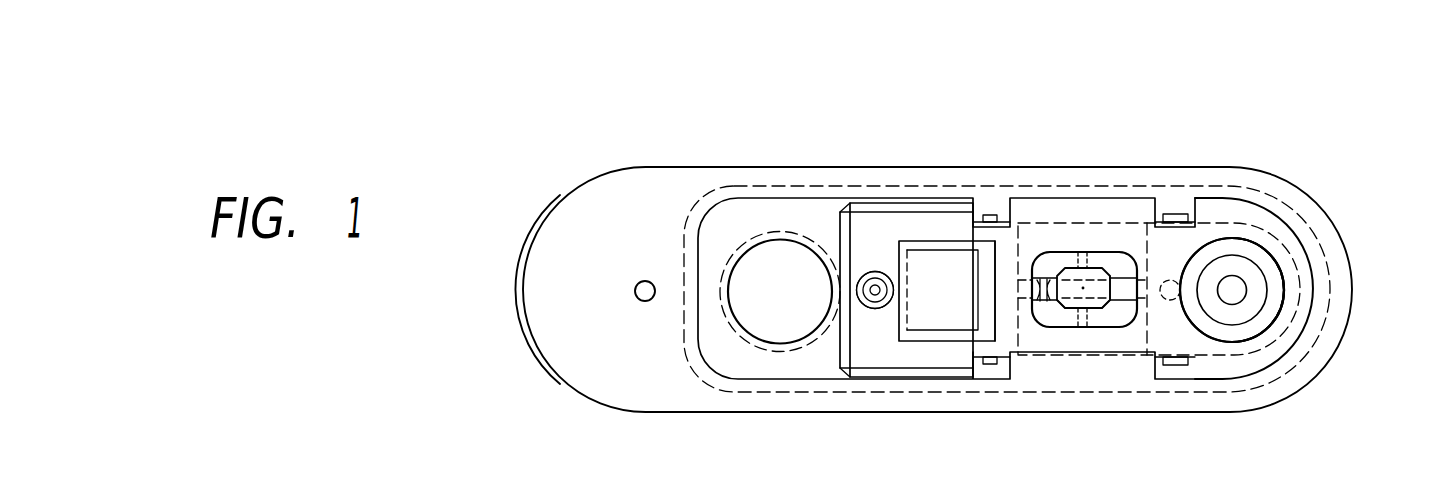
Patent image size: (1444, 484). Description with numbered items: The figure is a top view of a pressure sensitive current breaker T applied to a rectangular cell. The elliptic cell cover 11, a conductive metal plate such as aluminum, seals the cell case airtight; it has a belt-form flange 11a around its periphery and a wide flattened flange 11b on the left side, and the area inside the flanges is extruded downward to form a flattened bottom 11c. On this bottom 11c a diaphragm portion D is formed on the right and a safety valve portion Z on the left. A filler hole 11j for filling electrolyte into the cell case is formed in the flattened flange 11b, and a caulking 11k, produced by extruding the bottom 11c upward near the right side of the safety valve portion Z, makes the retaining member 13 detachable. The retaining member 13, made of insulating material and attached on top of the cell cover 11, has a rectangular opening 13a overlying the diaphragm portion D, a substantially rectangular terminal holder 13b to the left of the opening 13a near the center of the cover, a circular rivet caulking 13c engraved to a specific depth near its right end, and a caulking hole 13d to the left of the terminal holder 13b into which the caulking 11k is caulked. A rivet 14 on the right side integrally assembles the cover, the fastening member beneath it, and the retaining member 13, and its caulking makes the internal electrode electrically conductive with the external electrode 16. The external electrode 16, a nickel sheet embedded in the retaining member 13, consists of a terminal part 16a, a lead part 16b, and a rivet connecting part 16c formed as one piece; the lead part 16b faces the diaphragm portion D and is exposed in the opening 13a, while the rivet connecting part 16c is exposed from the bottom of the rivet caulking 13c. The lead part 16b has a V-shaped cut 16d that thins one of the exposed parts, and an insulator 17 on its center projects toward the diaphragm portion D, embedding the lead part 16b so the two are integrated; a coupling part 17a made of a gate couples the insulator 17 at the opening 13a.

The pressure sensitive current breaker T is at (628, 127).
The cell cover 11 is at (1288, 178).
The belt-form flange 11a is at (1320, 217).
The flattened flange 11b is at (550, 297).
The bottom 11c is at (808, 208).
The filler hole 11j is at (641, 280).
The caulking 11k is at (866, 271).
The retaining member 13 is at (888, 227).
The rectangular opening 13a is at (1110, 318).
The terminal holder 13b is at (987, 278).
The rivet caulking 13c is at (1273, 281).
The caulking hole 13d is at (875, 310).
The safety valve portion Z is at (778, 275).
The rivet 14 is at (1237, 268).
The external electrode 16 is at (937, 273).
The terminal part 16a is at (922, 260).
The lead part 16b is at (1127, 287).
The rivet connecting part 16c is at (1223, 240).
The V-shaped cut 16d is at (1040, 280).
The insulator 17 is at (1067, 267).
The coupling part 17a is at (1087, 252).
The diaphragm portion D is at (1067, 317).